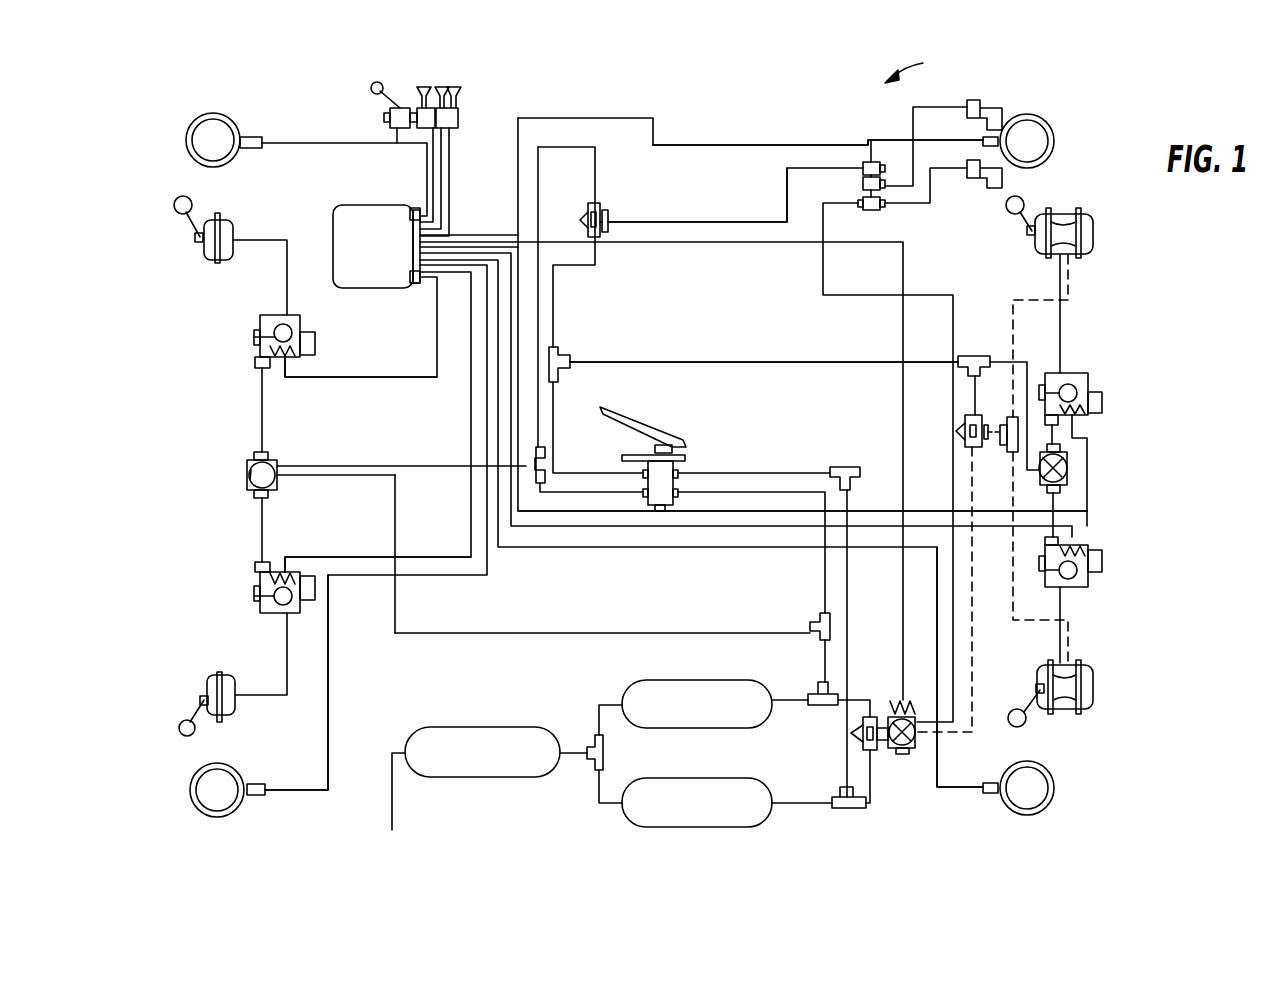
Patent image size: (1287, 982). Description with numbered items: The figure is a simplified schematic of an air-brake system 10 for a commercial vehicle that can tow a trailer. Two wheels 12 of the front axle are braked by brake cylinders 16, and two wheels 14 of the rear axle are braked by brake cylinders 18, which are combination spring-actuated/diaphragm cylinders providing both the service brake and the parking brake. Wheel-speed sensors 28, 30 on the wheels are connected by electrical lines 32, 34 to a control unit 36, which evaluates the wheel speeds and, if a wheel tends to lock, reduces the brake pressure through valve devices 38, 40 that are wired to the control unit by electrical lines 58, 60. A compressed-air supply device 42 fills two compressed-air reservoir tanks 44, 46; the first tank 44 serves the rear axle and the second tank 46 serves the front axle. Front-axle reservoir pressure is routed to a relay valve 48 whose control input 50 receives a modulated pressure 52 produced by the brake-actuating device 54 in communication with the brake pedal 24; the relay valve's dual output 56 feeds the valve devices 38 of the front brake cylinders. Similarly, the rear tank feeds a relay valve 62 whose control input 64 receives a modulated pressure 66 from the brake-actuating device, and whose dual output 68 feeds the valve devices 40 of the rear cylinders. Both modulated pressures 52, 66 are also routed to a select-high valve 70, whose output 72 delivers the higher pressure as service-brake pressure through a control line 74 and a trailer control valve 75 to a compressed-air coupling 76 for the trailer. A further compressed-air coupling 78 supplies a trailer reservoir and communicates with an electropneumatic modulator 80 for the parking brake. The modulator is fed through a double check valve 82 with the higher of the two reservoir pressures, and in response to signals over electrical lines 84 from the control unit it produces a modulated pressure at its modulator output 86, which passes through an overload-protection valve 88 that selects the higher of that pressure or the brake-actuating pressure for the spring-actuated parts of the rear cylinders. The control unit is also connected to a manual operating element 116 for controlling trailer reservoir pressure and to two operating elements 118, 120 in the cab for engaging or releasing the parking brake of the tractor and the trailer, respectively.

The air-brake system 10 is at (917, 67).
The wheels 12 is at (190, 130).
The wheels 14 is at (1066, 133).
The brake cylinders 16 is at (216, 270).
The brake cylinders 18 is at (1095, 230).
The brake pedal 24 is at (616, 410).
The wheel-speed sensors 28 is at (252, 135).
The wheel-speed sensors 30 is at (1003, 135).
The electrical lines 32 is at (290, 142).
The electrical lines 34 is at (858, 143).
The control unit 36 is at (340, 222).
The valve devices 38 is at (255, 343).
The valve devices 40 is at (1103, 403).
The compressed-air supply device 42 is at (450, 736).
The compressed-air reservoir tank 44 is at (642, 818).
The compressed-air reservoir tank 46 is at (652, 690).
The relay valve 48 is at (250, 480).
The control input 50 is at (267, 462).
The modulated pressure 52 is at (645, 498).
The brake-actuating device 54 is at (690, 460).
The dual output 56 is at (255, 455).
The electrical lines 58 is at (335, 376).
The electrical lines 60 is at (1085, 513).
The relay valve 62 is at (1068, 471).
The control input 64 is at (1027, 452).
The modulated pressure 66 is at (644, 471).
The dual output 68 is at (1062, 450).
The select-high valve 70 is at (597, 204).
The output 72 is at (607, 214).
The control line 74 is at (738, 222).
The trailer control valve 75 is at (877, 168).
The compressed-air coupling 76 is at (988, 100).
The compressed-air coupling 78 is at (1003, 178).
The electropneumatic modulator 80 is at (898, 760).
The double check valve 82 is at (850, 731).
The electrical lines 84 is at (903, 360).
The modulator output 86 is at (904, 754).
The overload-protection valve 88 is at (965, 439).
The manual operating element 116 is at (371, 88).
The operating element 118 is at (428, 106).
The operating element 120 is at (458, 88).